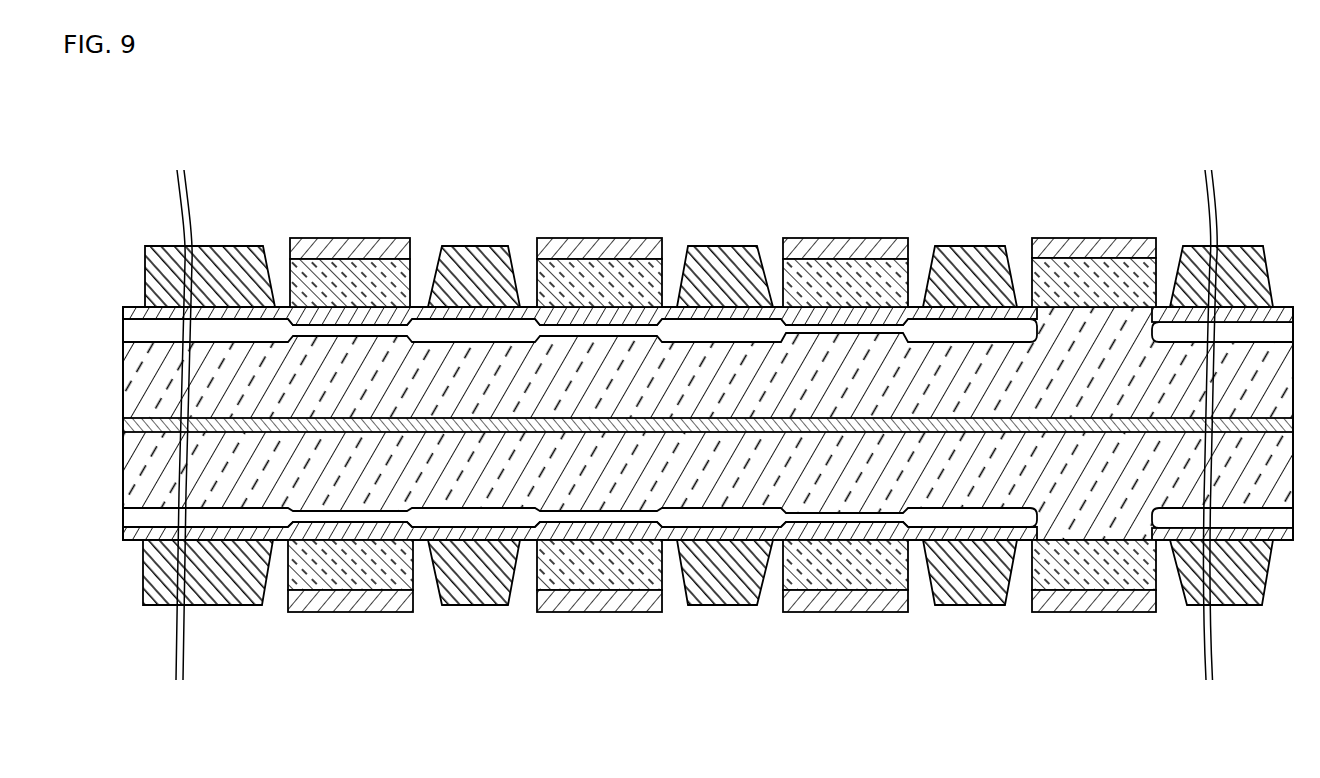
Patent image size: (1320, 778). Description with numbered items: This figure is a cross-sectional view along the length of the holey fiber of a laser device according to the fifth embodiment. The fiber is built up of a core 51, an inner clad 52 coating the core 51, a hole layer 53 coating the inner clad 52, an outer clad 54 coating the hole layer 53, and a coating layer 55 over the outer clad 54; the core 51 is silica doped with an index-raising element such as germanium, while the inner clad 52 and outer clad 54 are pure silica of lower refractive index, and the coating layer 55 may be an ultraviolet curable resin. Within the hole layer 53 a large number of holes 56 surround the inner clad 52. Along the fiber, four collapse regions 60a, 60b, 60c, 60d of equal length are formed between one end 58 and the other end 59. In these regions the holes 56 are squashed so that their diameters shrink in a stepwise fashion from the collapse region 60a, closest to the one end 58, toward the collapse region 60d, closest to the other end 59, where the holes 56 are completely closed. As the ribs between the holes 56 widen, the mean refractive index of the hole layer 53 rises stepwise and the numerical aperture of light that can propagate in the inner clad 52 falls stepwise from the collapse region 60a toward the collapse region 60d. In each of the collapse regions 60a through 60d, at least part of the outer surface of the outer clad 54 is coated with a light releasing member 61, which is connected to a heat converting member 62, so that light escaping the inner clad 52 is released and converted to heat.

The core 51 is at (786, 277).
The inner clad 52 is at (718, 422).
The hole layer 53 is at (520, 330).
The outer clad 54 is at (702, 363).
The coating layer 55 is at (238, 244).
The holes 56 is at (557, 260).
The one end 58 is at (123, 352).
The other end 59 is at (1293, 351).
The collapse region 60a is at (366, 352).
The collapse region 60b is at (613, 352).
The collapse region 60c is at (860, 212).
The collapse region 60d is at (1105, 212).
The light releasing member 61 is at (307, 263).
The heat converting member 62 is at (370, 248).